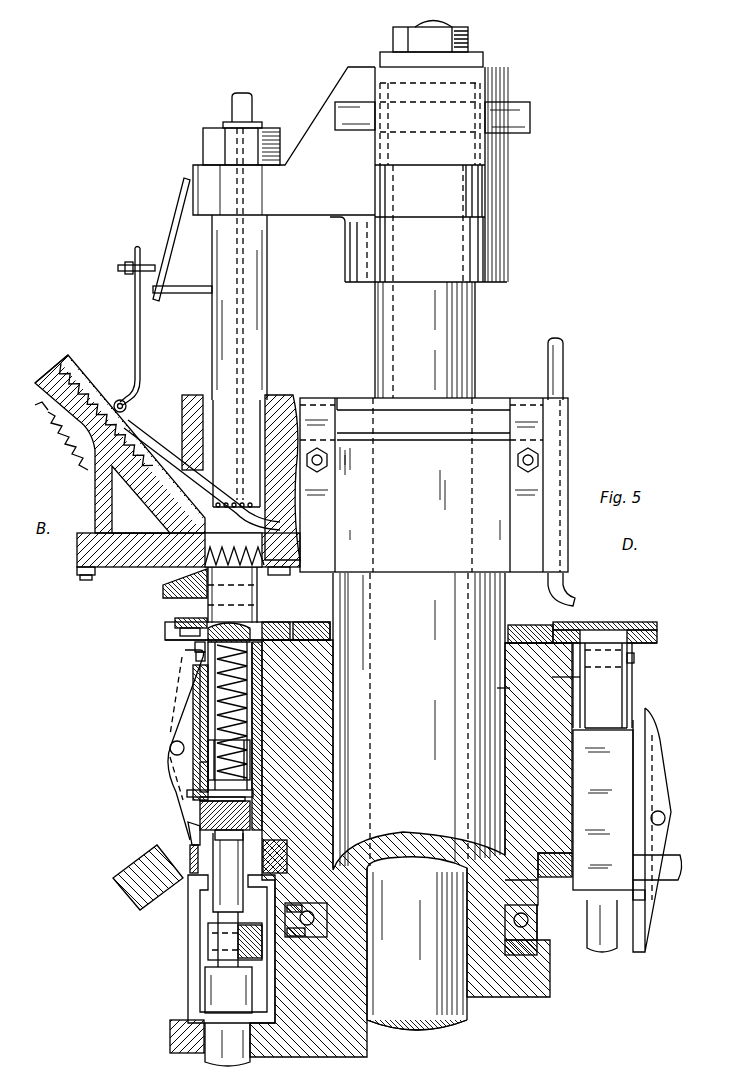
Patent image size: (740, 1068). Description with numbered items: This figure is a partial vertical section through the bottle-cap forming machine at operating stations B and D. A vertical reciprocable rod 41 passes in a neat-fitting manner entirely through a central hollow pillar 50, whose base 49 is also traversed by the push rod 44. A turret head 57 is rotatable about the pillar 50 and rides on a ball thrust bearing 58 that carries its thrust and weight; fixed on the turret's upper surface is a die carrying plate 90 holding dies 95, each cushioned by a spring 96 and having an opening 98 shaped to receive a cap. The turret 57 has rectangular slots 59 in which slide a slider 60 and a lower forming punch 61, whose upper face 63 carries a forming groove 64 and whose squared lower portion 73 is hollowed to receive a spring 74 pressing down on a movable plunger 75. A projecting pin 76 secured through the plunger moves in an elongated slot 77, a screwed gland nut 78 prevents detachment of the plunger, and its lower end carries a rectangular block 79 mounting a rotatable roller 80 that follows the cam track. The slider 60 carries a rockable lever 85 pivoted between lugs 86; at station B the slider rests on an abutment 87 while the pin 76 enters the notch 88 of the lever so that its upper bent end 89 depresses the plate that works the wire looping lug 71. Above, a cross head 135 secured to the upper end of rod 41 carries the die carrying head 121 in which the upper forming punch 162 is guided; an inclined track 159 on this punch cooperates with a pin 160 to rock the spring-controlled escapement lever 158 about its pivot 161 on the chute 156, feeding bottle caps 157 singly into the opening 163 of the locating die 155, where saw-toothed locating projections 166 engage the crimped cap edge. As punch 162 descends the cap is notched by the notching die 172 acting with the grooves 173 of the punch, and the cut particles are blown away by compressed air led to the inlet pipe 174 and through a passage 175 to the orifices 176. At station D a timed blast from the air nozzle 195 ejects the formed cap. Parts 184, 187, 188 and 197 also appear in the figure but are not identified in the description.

The vertical reciprocable rod 41 is at (477, 351).
The push rod 44 is at (222, 1060).
The base of central hollow pillar 49 is at (186, 1034).
The central hollow pillar 50 is at (497, 688).
The turret head 57 is at (552, 677).
The ball thrust bearing 58 is at (539, 934).
The rectangularly formed slots 59 is at (575, 683).
The slider 60 is at (195, 692).
The lower forming punch 61 is at (262, 590).
The upper faces 63 is at (596, 642).
The forming grooves 64 is at (583, 640).
The wire forming looping lug 71 is at (208, 603).
The squared lower portion 73 is at (262, 711).
The spring 74 is at (200, 713).
The movable plunger 75 is at (210, 787).
The projecting pin 76 is at (200, 794).
The elongated slot 77 is at (200, 768).
The screwed gland nut 78 is at (200, 822).
The rectangular block 79 is at (225, 930).
The rotatable roller 80 is at (236, 957).
The rockable lever 85 is at (176, 671).
The lugs 86 is at (662, 838).
The abutment 87 is at (257, 882).
The notch 88 is at (190, 836).
The upper bent end 89 is at (200, 654).
The die carrying plate 90 is at (293, 626).
The dies 95 is at (258, 623).
The spring 96 is at (655, 641).
The opening 98 is at (606, 668).
The die carrying head 121 is at (358, 402).
The cross head 135 is at (493, 80).
The locating die 155 is at (104, 567).
The chute 156 is at (62, 357).
The bottle caps 157 is at (76, 387).
The spring-controlled escapement lever 158 is at (96, 400).
The inclined track 159 is at (178, 201).
The pin 160 is at (148, 264).
The pivot 161 is at (119, 399).
The upper forming punch 162 is at (267, 318).
The opening 163 is at (165, 522).
The saw toothed locating projections 166 is at (203, 560).
The notching die 172 is at (203, 593).
The grooves 173 is at (168, 485).
The inlet pipe 174 is at (245, 113).
The passage 175 is at (244, 306).
The orifices 176 is at (228, 445).
The crossbar 184 is at (527, 128).
The bar 187 is at (485, 422).
The bar 188 is at (510, 515).
The air nozzle 195 is at (568, 600).
The rib 197 is at (295, 522).